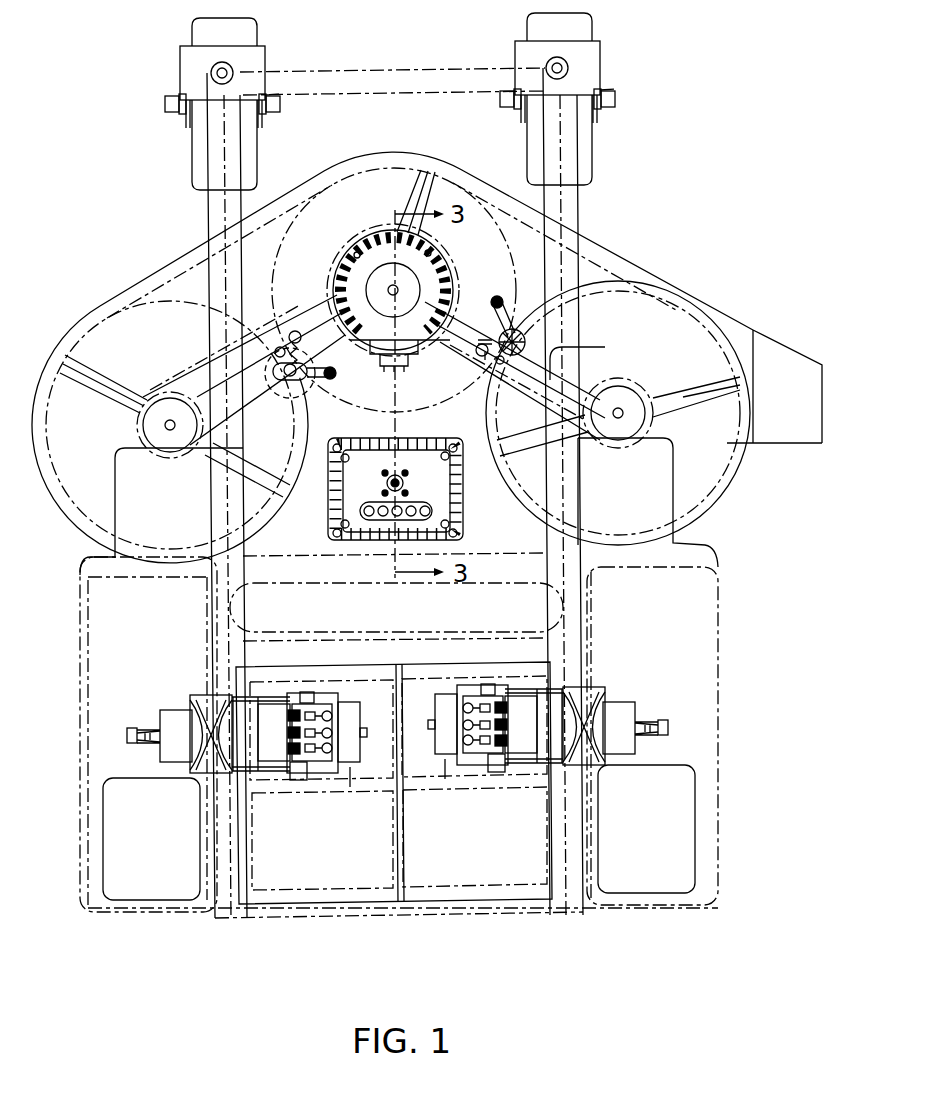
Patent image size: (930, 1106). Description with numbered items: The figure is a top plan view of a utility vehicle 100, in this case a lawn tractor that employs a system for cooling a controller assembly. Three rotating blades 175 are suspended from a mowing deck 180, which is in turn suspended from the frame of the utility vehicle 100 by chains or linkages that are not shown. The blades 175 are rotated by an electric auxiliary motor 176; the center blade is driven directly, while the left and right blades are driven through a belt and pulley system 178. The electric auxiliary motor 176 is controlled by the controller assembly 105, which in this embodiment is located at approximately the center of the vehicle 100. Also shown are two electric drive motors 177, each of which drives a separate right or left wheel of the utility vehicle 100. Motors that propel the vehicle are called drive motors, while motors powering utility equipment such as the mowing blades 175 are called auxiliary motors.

The utility vehicle 100 is at (112, 93).
The controller assembly 105 is at (463, 505).
The rotating blades 175 is at (408, 192).
The electric auxiliary motor 176 is at (360, 247).
The electric drive motors 177 is at (318, 697).
The belt and pulley system 178 is at (197, 377).
The mowing deck 180 is at (143, 277).